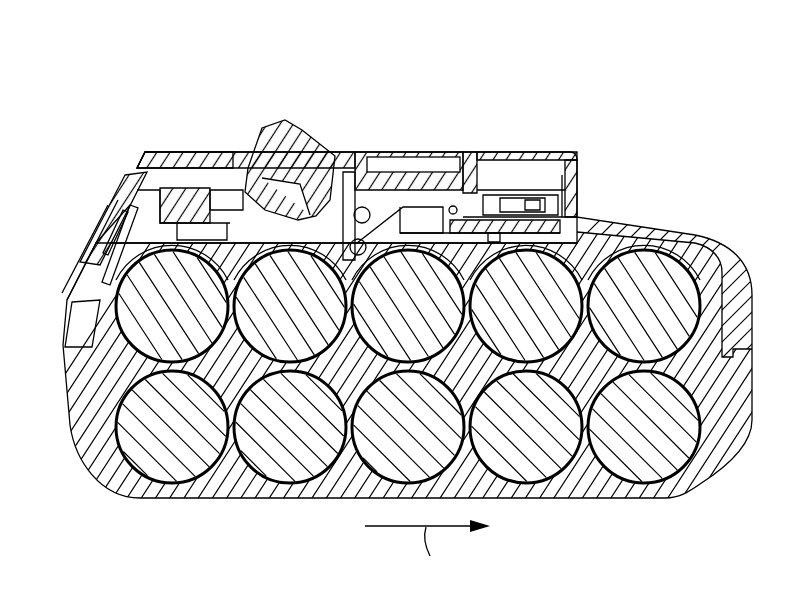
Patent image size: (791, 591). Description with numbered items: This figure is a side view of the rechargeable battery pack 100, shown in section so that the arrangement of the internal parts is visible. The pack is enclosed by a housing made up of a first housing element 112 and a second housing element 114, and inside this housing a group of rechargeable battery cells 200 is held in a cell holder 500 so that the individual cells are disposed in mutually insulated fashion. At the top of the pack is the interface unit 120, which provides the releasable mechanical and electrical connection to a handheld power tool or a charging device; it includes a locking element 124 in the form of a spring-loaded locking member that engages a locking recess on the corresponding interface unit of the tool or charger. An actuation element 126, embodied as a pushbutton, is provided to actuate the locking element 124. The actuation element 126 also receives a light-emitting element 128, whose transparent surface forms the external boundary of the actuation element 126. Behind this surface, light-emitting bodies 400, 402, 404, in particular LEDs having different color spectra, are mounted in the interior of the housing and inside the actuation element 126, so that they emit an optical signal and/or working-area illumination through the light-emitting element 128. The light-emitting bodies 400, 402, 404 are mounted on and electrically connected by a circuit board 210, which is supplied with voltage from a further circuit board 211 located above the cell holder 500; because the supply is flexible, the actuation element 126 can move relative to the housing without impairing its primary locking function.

The rechargeable battery pack 100 is at (103, 73).
The first housing element 112 is at (723, 257).
The second housing element 114 is at (240, 487).
The interface unit 120 is at (453, 130).
The locking element 124 is at (268, 130).
The actuation element 126 is at (122, 186).
The light-emitting element 128 is at (100, 222).
The rechargeable battery cells 200 is at (173, 465).
The circuit board 210 is at (85, 263).
The further circuit board 211 is at (203, 185).
The light-emitting body 400 is at (145, 131).
The light-emitting body 402 is at (145, 131).
The light-emitting body 404 is at (140, 163).
The cell holder 500 is at (623, 253).